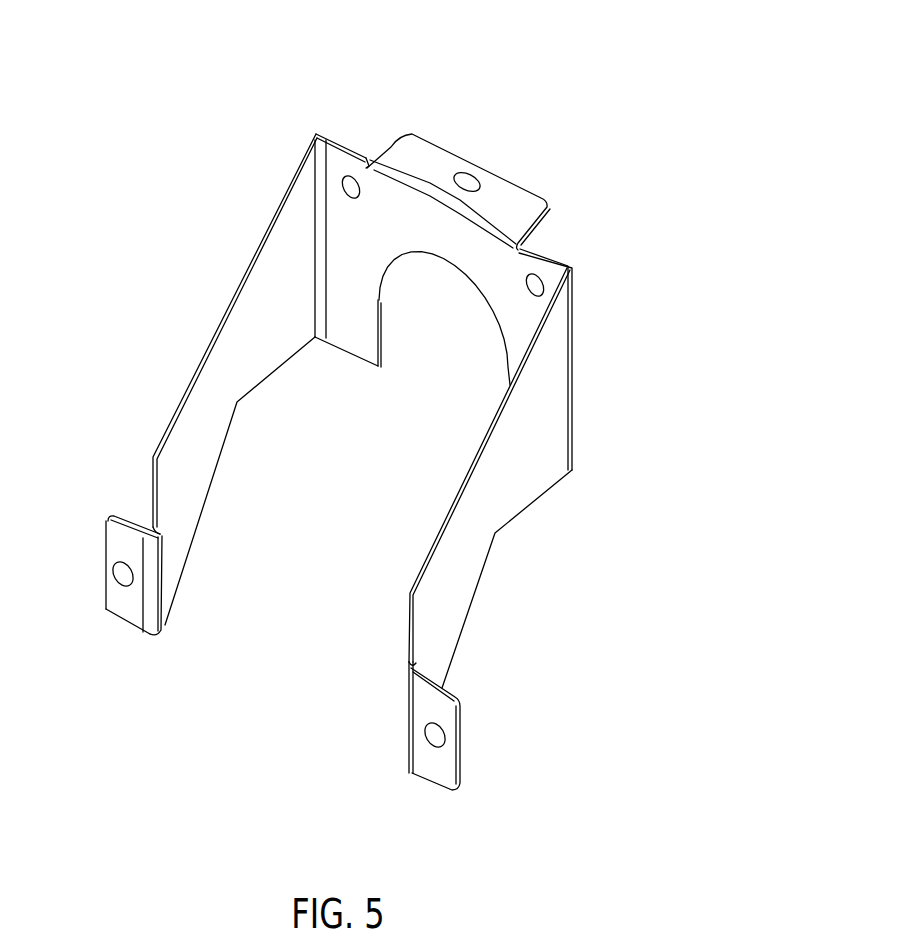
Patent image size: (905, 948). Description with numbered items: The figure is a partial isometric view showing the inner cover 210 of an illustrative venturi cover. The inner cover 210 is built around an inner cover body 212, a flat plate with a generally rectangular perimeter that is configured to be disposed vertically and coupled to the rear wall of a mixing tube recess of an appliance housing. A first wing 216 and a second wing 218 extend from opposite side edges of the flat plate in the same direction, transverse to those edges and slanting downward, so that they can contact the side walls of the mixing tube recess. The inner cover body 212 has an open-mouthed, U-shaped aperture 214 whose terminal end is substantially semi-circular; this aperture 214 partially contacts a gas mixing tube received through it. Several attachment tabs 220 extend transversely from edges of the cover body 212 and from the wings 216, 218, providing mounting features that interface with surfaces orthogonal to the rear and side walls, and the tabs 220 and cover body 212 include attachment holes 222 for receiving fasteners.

The inner cover 210 is at (533, 81).
The inner cover body 212 is at (396, 192).
The aperture 214 is at (447, 265).
The first wing 216 is at (219, 366).
The second wing 218 is at (521, 493).
The attachment tabs 220 is at (521, 199).
The attachment holes 222 is at (466, 172).